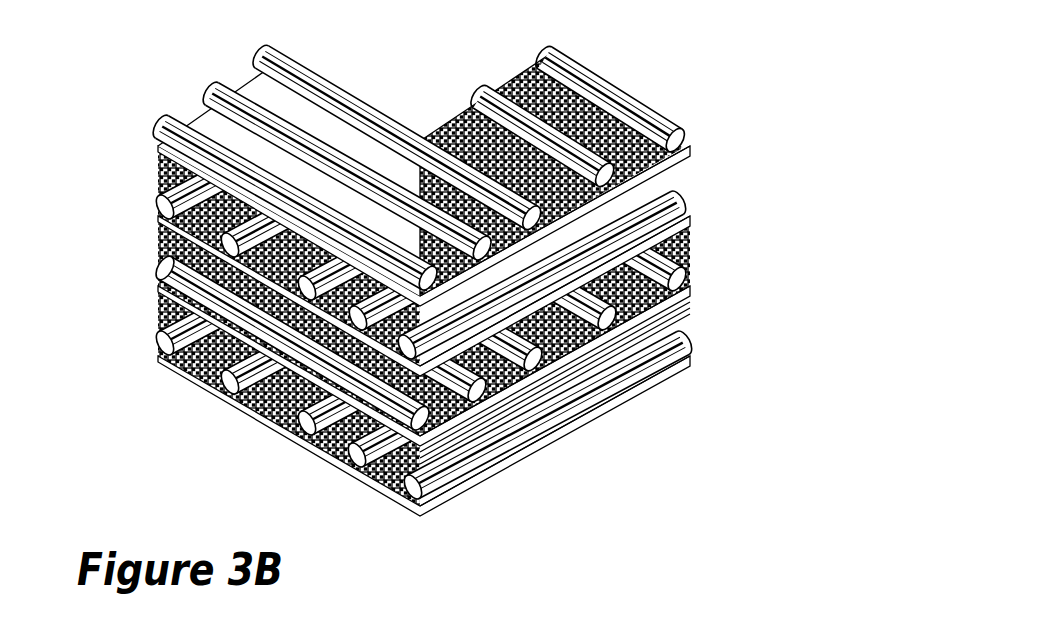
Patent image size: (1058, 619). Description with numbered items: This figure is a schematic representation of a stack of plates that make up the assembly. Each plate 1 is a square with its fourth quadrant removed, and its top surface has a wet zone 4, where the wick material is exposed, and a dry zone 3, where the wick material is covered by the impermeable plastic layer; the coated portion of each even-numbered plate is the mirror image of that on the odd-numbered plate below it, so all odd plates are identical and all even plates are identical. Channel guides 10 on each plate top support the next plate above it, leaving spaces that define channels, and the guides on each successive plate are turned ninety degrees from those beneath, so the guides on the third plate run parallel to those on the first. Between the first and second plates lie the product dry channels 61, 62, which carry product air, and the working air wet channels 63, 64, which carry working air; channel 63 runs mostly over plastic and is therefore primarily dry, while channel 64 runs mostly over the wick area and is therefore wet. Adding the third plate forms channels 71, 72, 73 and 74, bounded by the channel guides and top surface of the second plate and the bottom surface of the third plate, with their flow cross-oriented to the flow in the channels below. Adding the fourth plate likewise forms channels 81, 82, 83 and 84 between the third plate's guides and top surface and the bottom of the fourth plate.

The plate 1 is at (709, 353).
The dry zone 3 is at (463, 130).
The wet zone 4 is at (298, 112).
The channel guides 10 is at (387, 490).
The product dry channel 61 is at (201, 378).
The product dry channel 62 is at (262, 417).
The working air wet channel 63 is at (325, 445).
The working air wet channel 64 is at (375, 470).
The channel 71 is at (458, 380).
The channel 72 is at (528, 336).
The channel 73 is at (585, 330).
The channel 74 is at (628, 300).
The channel 81 is at (172, 200).
The channel 82 is at (225, 259).
The channel 83 is at (298, 300).
The channel 84 is at (345, 322).